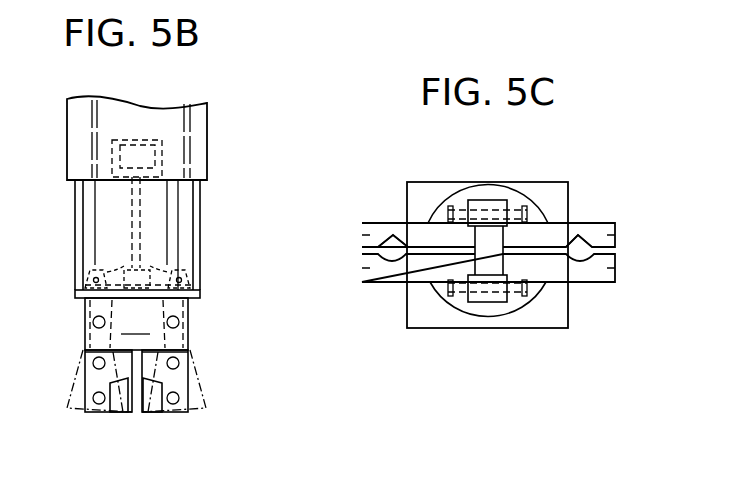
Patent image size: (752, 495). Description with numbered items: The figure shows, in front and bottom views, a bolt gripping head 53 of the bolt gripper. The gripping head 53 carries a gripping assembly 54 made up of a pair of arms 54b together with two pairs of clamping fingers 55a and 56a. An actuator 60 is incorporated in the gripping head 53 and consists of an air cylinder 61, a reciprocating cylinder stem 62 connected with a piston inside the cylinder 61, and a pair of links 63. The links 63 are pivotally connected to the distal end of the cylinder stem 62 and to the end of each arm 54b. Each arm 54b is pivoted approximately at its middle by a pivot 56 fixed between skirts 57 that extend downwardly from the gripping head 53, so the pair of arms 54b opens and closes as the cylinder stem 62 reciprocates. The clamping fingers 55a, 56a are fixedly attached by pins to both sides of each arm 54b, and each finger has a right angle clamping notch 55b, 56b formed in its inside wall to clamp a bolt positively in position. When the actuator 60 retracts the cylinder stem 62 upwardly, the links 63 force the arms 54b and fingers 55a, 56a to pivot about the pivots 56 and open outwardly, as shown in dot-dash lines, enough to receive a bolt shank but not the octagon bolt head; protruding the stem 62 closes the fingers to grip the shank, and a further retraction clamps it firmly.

In FIG. 5B, the gripping head 53 is at (183, 242).
In FIG. 5C, the gripping head 53 is at (515, 196).
In FIG. 5B, the gripping assembly 54 is at (213, 384).
In FIG. 5C, the gripping assembly 54 is at (595, 187).
In FIG. 5B, the arm 54b is at (84, 352).
In FIG. 5C, the arm 54b is at (487, 200).
In FIG. 5B, the clamping finger 55a is at (135, 433).
In FIG. 5C, the clamping finger 55a is at (615, 268).
In FIG. 5C, the right angle clamping notch 55b is at (582, 256).
In FIG. 5B, the pivot 56 is at (93, 321).
In FIG. 5C, the clamping finger 56a is at (362, 268).
In FIG. 5C, the right angle clamping notch 56b is at (400, 255).
In FIG. 5B, the skirt 57 is at (136, 324).
In FIG. 5B, the actuator 60 is at (110, 196).
In FIG. 5B, the air cylinder 61 is at (163, 161).
In FIG. 5B, the cylinder stem 62 is at (155, 207).
In FIG. 5B, the link 63 is at (110, 272).